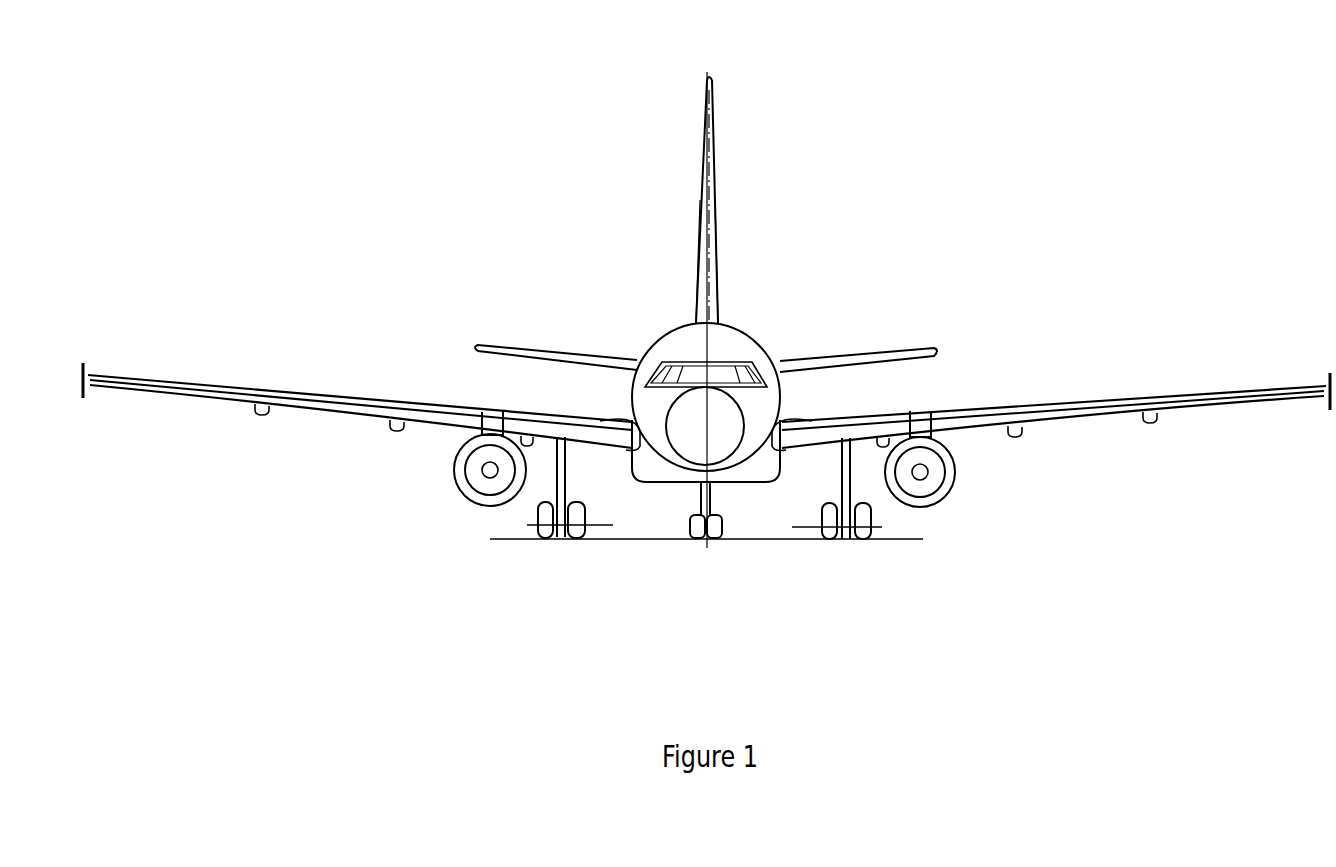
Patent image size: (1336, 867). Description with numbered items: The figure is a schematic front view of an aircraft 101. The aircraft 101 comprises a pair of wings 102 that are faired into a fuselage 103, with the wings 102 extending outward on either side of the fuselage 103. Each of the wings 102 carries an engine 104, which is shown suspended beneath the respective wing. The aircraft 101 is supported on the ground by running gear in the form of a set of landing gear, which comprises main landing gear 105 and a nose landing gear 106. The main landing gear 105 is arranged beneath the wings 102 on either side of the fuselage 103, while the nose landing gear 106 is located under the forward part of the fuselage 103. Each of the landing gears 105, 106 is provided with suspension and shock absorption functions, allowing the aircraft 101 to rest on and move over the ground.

The aircraft 101 is at (527, 215).
The wings 102 is at (257, 413).
The fuselage 103 is at (750, 335).
The engine 104 is at (485, 492).
The main landing gear 105 is at (557, 535).
The nose landing gear 106 is at (707, 538).